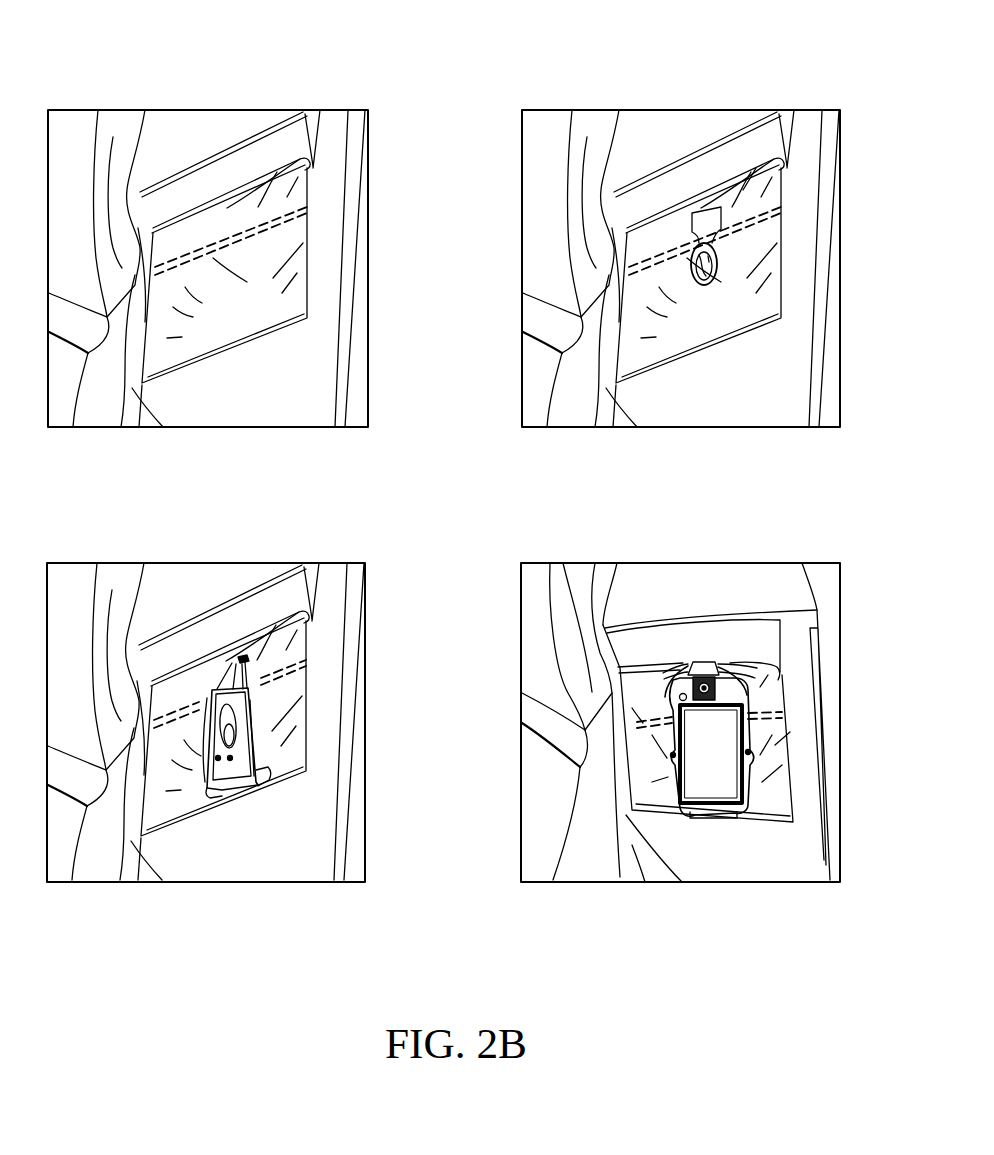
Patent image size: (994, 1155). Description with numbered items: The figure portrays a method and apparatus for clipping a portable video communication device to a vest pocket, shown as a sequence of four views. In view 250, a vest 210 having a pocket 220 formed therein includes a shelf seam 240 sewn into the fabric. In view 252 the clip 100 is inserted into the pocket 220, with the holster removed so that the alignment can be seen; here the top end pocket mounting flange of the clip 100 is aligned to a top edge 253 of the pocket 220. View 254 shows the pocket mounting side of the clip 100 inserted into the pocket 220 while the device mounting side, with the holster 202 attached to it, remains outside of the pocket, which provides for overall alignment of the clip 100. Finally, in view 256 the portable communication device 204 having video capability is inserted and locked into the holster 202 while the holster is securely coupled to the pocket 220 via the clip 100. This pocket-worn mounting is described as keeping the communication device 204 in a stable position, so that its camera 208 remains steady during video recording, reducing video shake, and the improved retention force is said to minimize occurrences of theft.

The clip 100 is at (707, 212).
The holster 202 is at (245, 655).
The portable communication device 204 is at (697, 785).
The camera 208 is at (757, 692).
The vest 210 is at (223, 125).
The pocket 220 is at (243, 335).
The shelf seam 240 is at (310, 209).
The view 250 is at (381, 85).
The view 252 is at (855, 85).
The top edge 253 is at (745, 187).
The view 254 is at (381, 538).
The view 256 is at (850, 538).